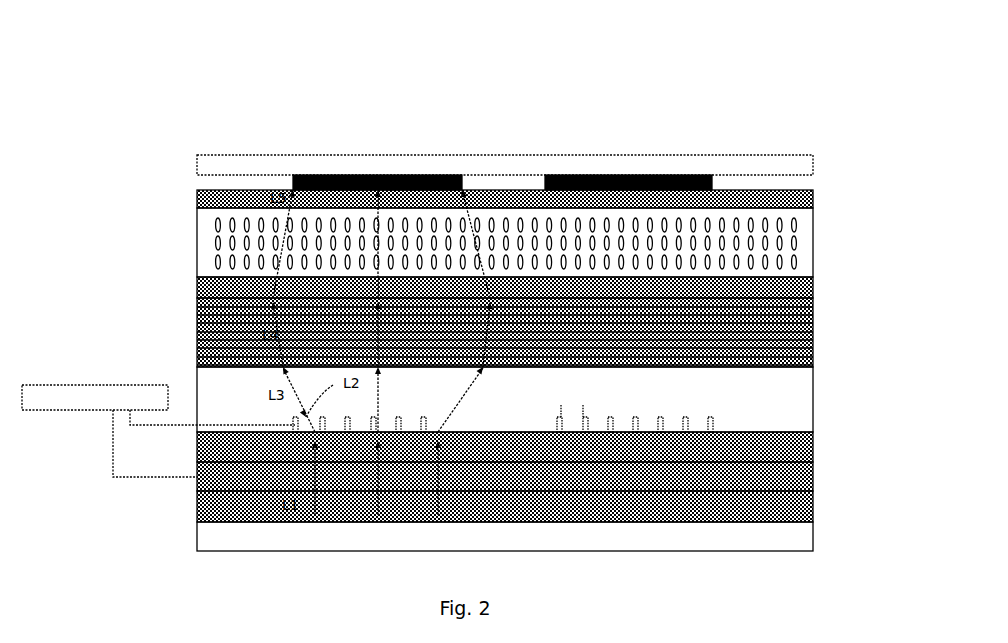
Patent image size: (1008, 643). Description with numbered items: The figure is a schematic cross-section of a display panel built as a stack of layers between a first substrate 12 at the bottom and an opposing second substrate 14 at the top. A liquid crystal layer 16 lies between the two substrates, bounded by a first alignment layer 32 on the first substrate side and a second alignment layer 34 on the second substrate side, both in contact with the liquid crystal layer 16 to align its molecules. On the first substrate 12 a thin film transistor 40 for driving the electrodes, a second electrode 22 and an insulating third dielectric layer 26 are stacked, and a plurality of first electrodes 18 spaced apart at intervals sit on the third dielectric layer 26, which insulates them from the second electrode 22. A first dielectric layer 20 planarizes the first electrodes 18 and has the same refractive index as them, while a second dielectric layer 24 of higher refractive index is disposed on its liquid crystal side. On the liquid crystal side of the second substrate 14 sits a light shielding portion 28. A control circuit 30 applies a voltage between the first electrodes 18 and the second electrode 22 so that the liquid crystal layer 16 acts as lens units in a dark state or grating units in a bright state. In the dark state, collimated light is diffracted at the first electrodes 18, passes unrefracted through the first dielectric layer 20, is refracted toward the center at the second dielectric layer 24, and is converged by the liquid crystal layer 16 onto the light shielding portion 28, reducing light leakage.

The first substrate 12 is at (813, 533).
The second substrate 14 is at (813, 165).
The liquid crystal layer 16 is at (813, 243).
The first electrodes 18 is at (712, 417).
The first dielectric layer 20 is at (813, 388).
The second electrode 22 is at (813, 476).
The second dielectric layer 24 is at (813, 334).
The third dielectric layer 26 is at (813, 447).
The light shielding portion 28 is at (628, 175).
The control circuit 30 is at (158, 431).
The first alignment layer 32 is at (813, 291).
The second alignment layer 34 is at (813, 200).
The thin film transistor 40 is at (813, 505).